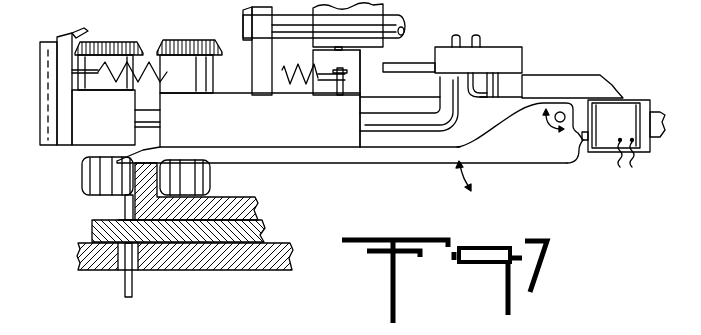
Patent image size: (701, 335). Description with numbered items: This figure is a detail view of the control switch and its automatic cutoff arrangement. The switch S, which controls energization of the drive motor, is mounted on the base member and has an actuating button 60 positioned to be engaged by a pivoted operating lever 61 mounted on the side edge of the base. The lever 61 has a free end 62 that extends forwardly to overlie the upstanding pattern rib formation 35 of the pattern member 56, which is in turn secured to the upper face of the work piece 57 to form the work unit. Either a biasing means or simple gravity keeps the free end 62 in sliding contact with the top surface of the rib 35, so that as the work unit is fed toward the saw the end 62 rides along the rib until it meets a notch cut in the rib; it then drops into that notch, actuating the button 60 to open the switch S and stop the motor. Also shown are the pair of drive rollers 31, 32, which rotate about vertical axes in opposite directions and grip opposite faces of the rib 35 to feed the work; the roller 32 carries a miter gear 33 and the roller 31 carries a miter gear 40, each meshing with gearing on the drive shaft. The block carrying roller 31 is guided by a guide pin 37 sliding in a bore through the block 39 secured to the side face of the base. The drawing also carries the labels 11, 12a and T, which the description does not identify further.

The pin 11 is at (132, 276).
The base portion 12a is at (120, 216).
The drive roller 31 is at (82, 170).
The drive roller 32 is at (210, 179).
The miter gear 33 is at (206, 30).
The pattern rib formation 35 is at (127, 210).
The guide pin 37 is at (393, 126).
The block 39 is at (270, 123).
The miter gear 40 is at (121, 26).
The pattern member 56 is at (258, 205).
The work piece 57 is at (265, 232).
The actuating button 60 is at (582, 142).
The pivoted operating lever 61 is at (505, 141).
The free end 62 is at (143, 158).
The switch S is at (628, 124).
The table T is at (290, 255).